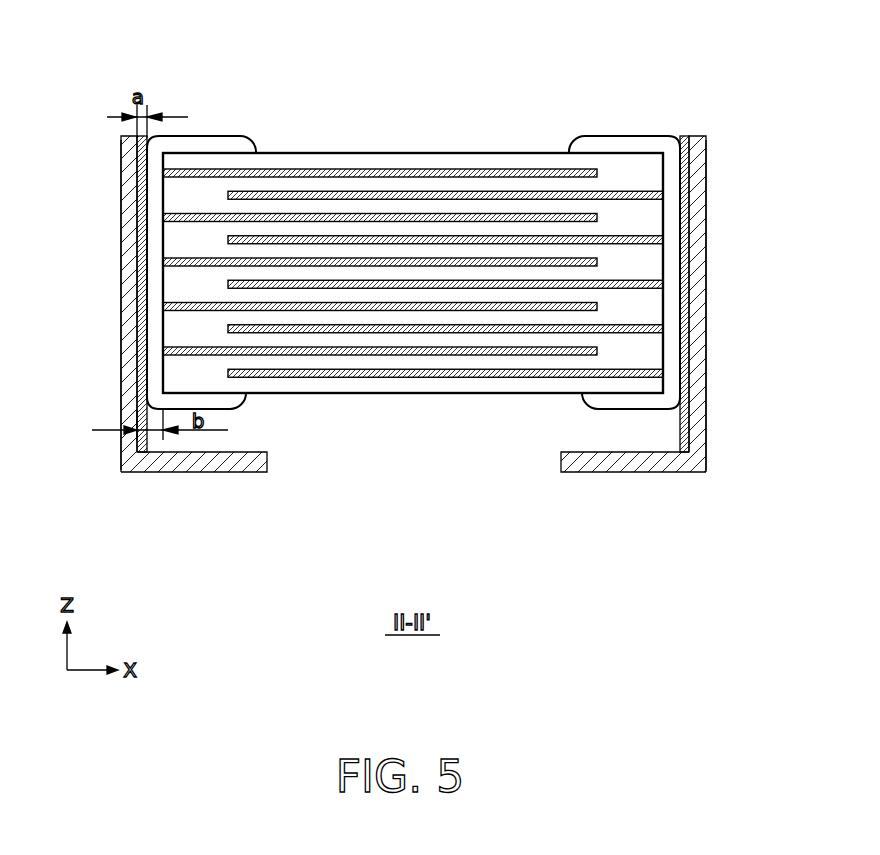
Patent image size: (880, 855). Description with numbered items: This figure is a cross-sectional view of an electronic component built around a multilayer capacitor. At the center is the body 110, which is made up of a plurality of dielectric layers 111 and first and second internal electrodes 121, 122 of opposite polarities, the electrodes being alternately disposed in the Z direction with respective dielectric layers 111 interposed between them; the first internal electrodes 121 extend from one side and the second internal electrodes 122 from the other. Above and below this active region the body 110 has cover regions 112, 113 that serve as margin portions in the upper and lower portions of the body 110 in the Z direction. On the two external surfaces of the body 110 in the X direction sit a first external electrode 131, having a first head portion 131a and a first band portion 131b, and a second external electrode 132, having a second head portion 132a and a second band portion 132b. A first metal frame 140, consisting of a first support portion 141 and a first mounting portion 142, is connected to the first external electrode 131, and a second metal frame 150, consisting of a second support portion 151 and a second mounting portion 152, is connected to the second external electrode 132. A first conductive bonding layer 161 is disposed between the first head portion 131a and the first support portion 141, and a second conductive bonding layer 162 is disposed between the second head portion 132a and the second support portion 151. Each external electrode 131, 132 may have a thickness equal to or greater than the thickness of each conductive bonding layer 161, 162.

The body 110 is at (416, 151).
The dielectric layer 111 is at (478, 205).
The cover region 112 is at (349, 166).
The cover region 113 is at (442, 394).
The first internal electrode 121 is at (283, 170).
The second internal electrode 122 is at (530, 191).
The first external electrode 131 is at (167, 231).
The first head portion 131a is at (113, 254).
The first band portion 131b is at (203, 147).
The second external electrode 132 is at (652, 244).
The second head portion 132a is at (706, 267).
The second band portion 132b is at (616, 137).
The first metal frame 140 is at (170, 354).
The first support portion 141 is at (121, 439).
The first mounting portion 142 is at (194, 490).
The second metal frame 150 is at (657, 354).
The second support portion 151 is at (706, 428).
The second mounting portion 152 is at (633, 490).
The first conductive bonding layer 161 is at (121, 203).
The second conductive bonding layer 162 is at (705, 205).